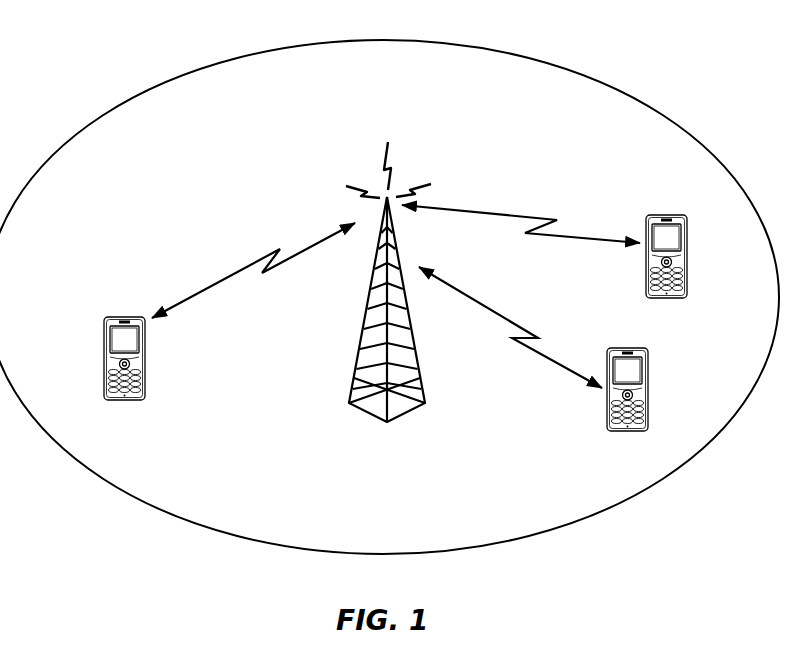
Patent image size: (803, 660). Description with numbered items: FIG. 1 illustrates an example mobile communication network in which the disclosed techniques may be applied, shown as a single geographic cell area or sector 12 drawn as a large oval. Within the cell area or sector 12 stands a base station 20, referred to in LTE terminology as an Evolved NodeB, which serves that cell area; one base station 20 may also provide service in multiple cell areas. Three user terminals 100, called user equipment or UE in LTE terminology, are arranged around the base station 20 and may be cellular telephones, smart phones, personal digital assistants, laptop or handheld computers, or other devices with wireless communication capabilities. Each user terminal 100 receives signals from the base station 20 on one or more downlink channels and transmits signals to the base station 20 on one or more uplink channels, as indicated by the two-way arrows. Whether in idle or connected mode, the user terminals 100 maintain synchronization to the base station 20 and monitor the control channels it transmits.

The geographic cell area or sector 12 is at (590, 78).
The base station 20 is at (421, 377).
The user terminal 100 is at (104, 375).